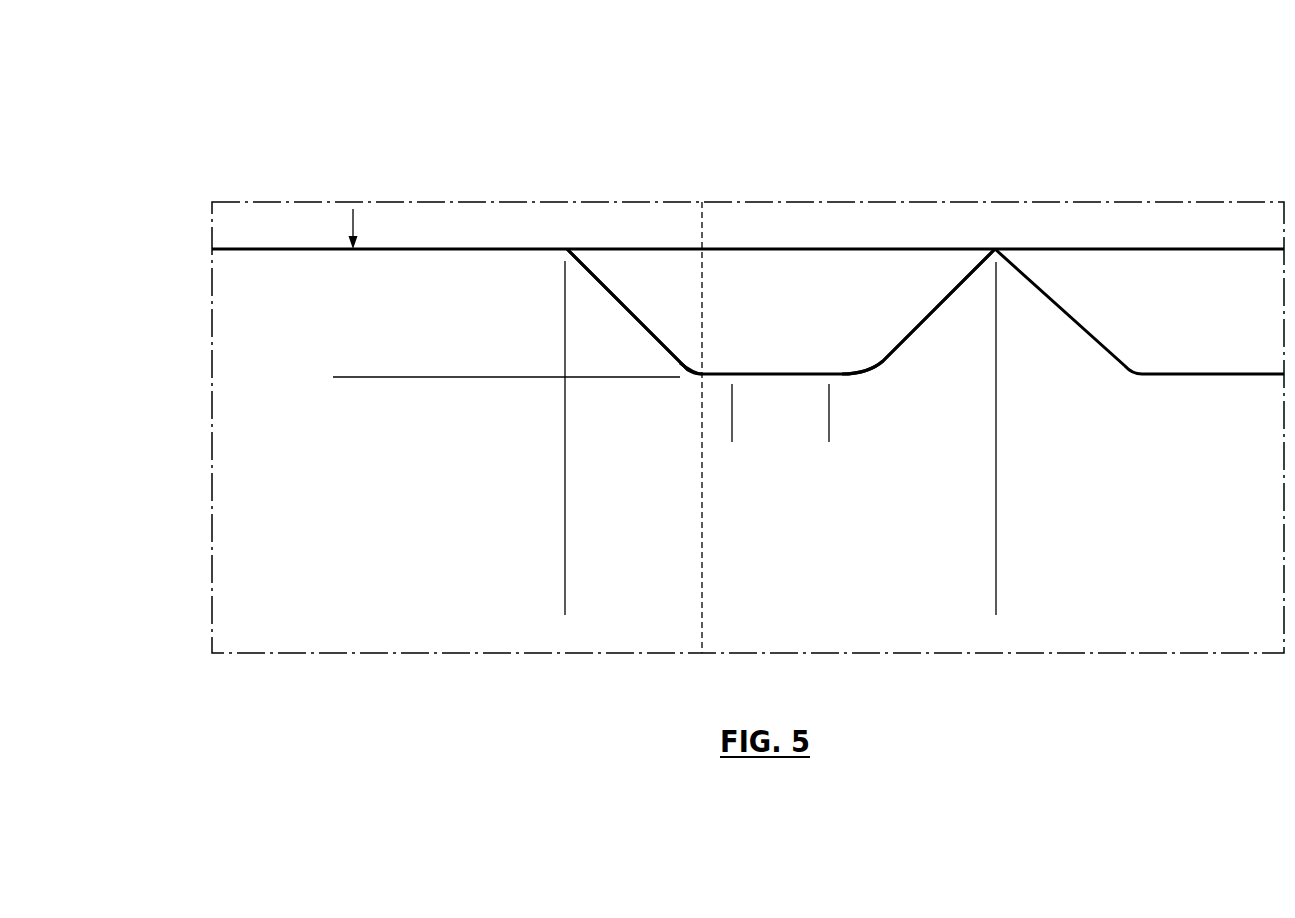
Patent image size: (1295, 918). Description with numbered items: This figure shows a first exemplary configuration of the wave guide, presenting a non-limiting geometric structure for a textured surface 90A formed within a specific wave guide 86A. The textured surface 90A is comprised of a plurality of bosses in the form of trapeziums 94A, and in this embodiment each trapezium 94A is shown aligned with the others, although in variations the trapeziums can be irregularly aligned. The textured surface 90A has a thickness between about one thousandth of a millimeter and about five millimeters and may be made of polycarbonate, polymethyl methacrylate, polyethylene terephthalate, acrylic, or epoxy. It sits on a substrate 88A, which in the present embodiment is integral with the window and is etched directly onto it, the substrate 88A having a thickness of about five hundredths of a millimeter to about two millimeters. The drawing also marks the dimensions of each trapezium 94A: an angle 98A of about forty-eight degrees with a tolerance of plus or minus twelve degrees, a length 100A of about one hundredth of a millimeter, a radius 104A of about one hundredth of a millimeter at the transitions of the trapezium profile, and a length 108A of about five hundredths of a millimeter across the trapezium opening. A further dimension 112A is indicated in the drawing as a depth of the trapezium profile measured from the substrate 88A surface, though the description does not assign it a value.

The wave guide 86A is at (298, 148).
The substrate 88A is at (255, 223).
The textured surface 90A is at (650, 342).
The trapezium 94A is at (640, 270).
The angle 98A is at (880, 212).
The length 100A is at (875, 427).
The radius 104A is at (778, 437).
The length 108A is at (985, 597).
The groove depth 112A is at (353, 388).